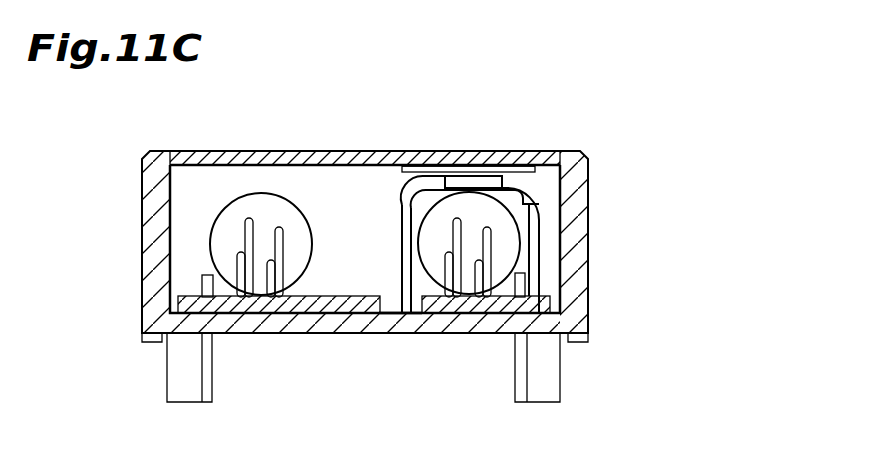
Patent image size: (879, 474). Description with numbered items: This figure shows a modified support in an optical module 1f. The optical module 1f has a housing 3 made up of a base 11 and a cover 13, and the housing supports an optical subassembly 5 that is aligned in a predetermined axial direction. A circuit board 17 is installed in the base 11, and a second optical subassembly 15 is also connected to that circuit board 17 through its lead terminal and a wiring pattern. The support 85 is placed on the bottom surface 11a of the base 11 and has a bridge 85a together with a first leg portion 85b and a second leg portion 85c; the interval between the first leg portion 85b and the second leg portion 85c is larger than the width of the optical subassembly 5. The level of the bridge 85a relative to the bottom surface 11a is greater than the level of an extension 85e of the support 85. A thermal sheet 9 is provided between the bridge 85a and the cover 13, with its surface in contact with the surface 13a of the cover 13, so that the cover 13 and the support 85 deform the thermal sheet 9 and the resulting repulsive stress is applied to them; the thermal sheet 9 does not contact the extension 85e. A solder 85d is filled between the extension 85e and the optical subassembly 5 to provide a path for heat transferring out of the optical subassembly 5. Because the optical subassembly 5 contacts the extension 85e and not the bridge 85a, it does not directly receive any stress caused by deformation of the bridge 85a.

The optical module 1f is at (732, 106).
The housing 3 is at (667, 93).
The base 11 is at (576, 198).
The bottom surface 11a is at (405, 315).
The cover 13 is at (552, 149).
The surface 13a is at (338, 167).
The thermal sheet 9 is at (527, 167).
The circuit board 17 is at (360, 303).
The optical subassembly 15 is at (293, 262).
The optical subassembly 5 is at (500, 263).
The support 85 is at (401, 258).
The bridge 85a is at (468, 174).
The first leg portion 85b is at (402, 218).
The second leg portion 85c is at (535, 242).
The solder 85d is at (445, 184).
The extension 85e is at (483, 184).